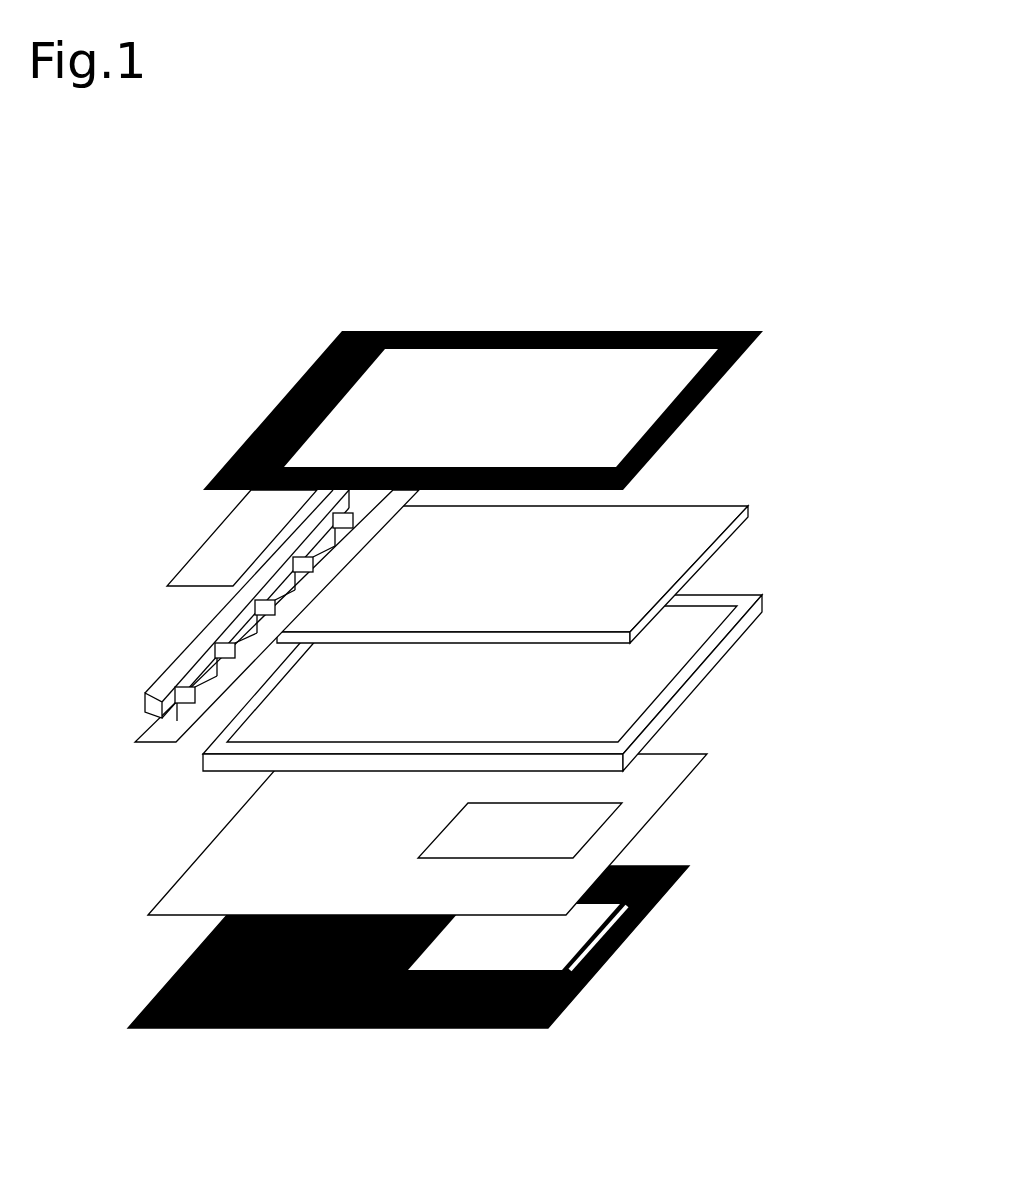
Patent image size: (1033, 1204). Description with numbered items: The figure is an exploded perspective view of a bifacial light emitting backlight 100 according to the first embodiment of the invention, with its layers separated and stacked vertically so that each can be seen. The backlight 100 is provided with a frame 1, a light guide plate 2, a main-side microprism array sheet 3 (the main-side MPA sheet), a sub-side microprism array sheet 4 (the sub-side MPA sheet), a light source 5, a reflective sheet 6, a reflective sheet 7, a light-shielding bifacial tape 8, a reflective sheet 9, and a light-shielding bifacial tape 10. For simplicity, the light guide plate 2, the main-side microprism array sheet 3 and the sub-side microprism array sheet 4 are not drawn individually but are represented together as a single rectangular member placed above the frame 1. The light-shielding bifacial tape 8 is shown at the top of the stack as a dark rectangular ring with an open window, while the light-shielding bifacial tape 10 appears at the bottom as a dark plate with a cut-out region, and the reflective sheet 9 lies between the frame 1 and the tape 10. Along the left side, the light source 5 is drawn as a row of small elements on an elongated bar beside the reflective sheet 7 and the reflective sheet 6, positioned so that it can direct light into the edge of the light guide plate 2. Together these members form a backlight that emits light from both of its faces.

The bifacial light emitting backlight 100 is at (530, 270).
The frame 1 is at (747, 595).
The light guide plate 2 is at (565, 551).
The main-side microprism array sheet 3 is at (565, 551).
The sub-side microprism array sheet 4 is at (728, 506).
The light source 5 is at (150, 690).
The reflective sheet 6 is at (187, 563).
The reflective sheet 7 is at (140, 738).
The light-shielding bifacial tape 8 is at (710, 331).
The reflective sheet 9 is at (705, 753).
The light-shielding bifacial tape 10 is at (673, 866).